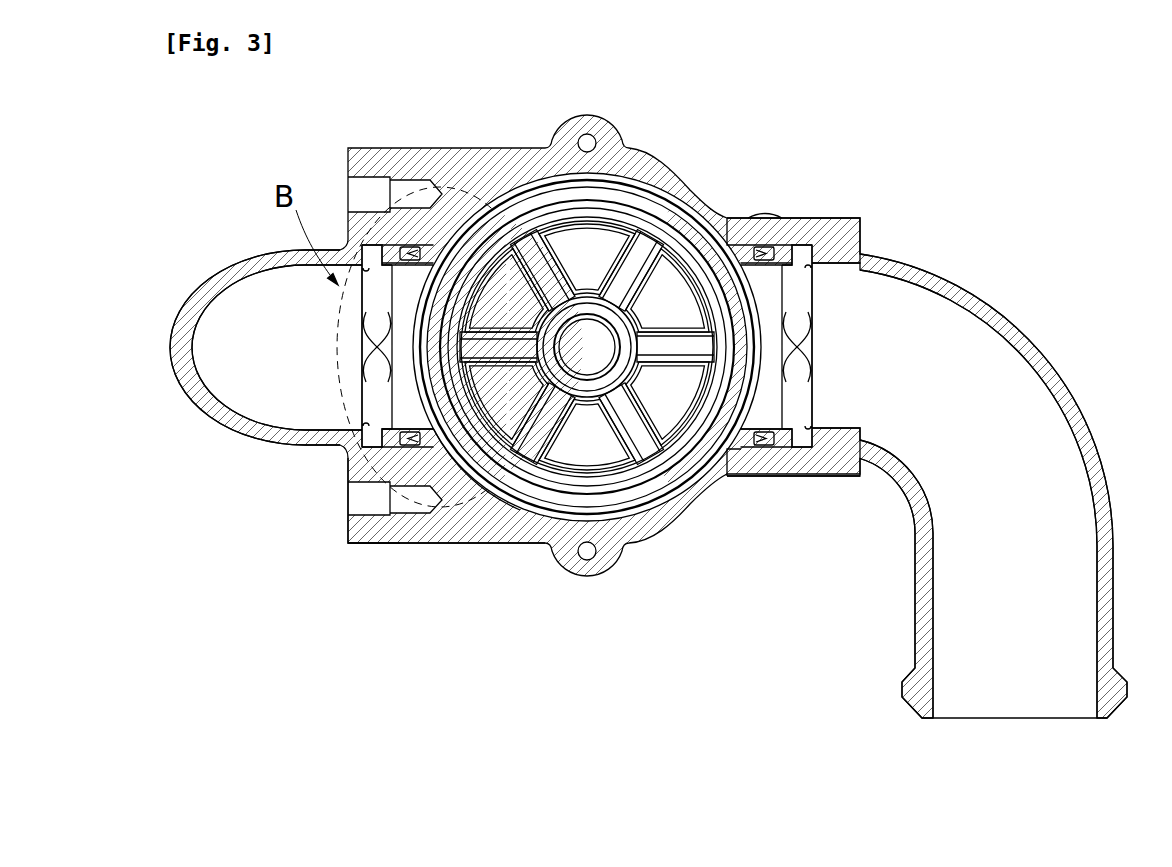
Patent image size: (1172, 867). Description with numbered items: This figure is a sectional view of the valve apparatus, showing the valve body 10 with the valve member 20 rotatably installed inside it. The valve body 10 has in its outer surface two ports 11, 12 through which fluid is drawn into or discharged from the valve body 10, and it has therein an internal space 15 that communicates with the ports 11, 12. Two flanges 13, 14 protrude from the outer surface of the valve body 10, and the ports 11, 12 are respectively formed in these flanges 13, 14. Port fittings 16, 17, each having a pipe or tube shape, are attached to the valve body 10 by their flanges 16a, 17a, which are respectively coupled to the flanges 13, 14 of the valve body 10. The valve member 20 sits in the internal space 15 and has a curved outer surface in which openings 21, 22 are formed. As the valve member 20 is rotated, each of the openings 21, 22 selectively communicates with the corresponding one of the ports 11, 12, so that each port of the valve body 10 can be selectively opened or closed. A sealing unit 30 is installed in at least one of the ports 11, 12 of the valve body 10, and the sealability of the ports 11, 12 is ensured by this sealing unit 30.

The valve body 10 is at (653, 522).
The port 11 is at (463, 453).
The port 12 is at (735, 447).
The flange 13 is at (418, 543).
The flange 14 is at (797, 476).
The internal space 15 is at (576, 259).
The port fitting 16 is at (238, 433).
The flange 16a is at (360, 543).
The port fitting 17 is at (1040, 351).
The flange 17a is at (848, 218).
The valve member 20 is at (698, 203).
The opening 21 is at (600, 190).
The opening 22 is at (573, 495).
The sealing unit 30 is at (338, 347).